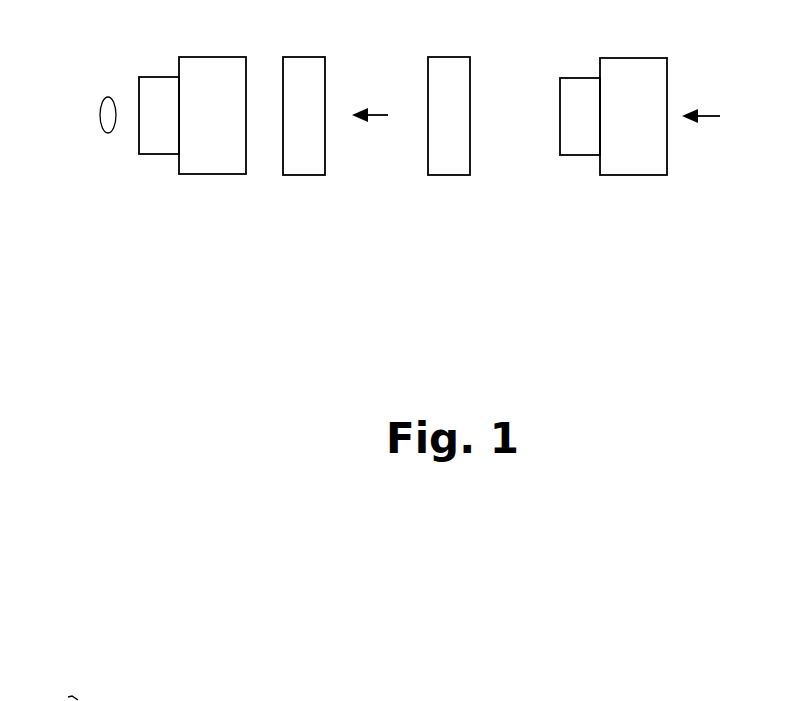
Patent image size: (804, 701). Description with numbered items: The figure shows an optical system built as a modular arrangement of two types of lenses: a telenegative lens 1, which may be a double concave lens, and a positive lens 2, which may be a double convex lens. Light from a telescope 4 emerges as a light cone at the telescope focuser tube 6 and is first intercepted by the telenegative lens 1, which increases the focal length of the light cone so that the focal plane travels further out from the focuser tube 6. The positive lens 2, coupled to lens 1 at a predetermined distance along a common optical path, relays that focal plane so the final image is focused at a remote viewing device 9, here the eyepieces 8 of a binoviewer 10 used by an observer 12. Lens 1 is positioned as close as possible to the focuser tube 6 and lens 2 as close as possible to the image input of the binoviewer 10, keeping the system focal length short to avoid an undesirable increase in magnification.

The telenegative lens 1 is at (456, 170).
The positive lens 2 is at (303, 175).
The telescope 4 is at (641, 175).
The telescope focuser tube 6 is at (579, 155).
The eyepieces 8 is at (159, 155).
The remote viewing device 9 is at (210, 23).
The binoviewer 10 is at (216, 172).
The observer 12 is at (108, 133).